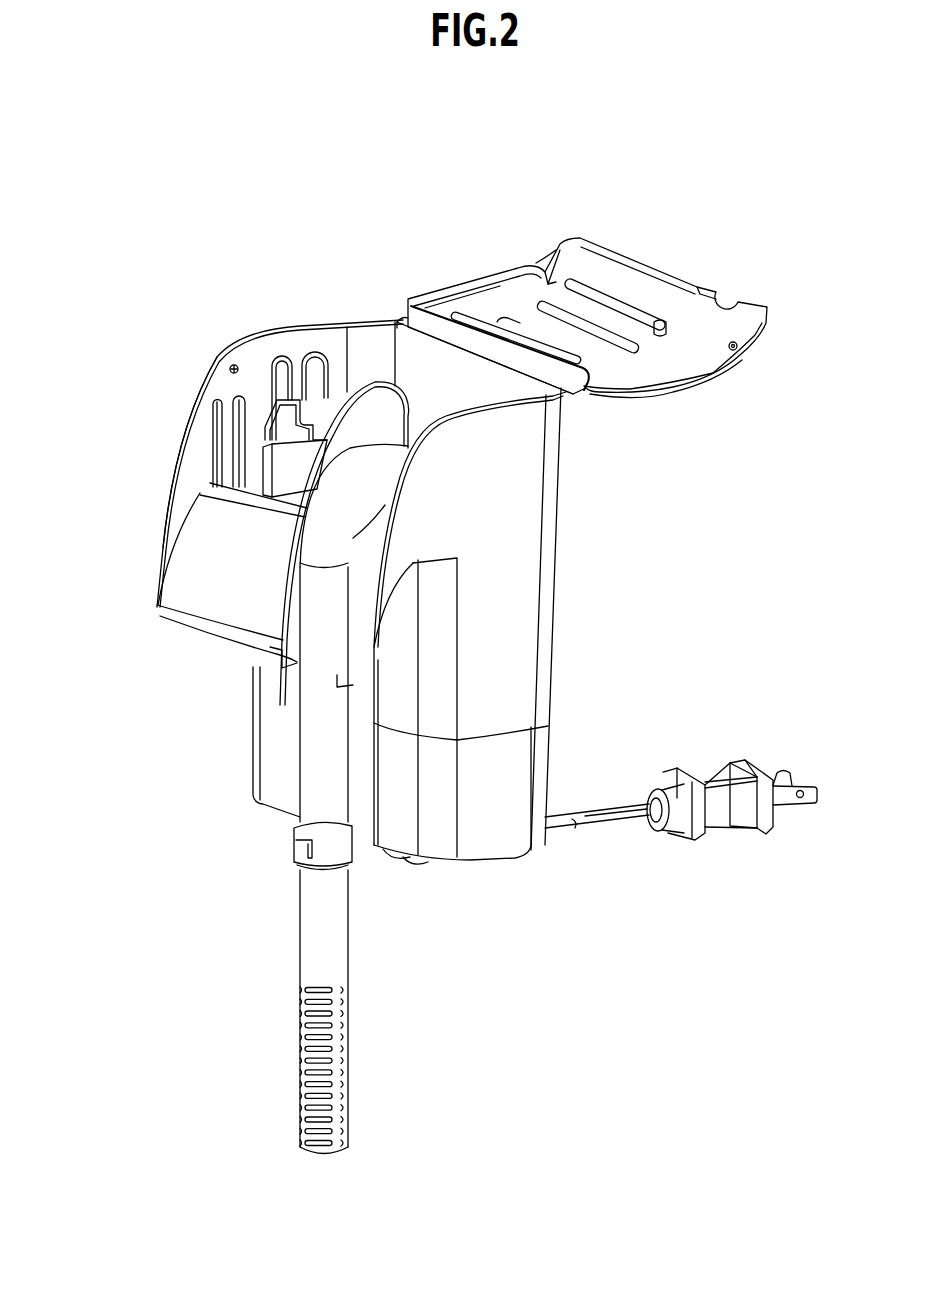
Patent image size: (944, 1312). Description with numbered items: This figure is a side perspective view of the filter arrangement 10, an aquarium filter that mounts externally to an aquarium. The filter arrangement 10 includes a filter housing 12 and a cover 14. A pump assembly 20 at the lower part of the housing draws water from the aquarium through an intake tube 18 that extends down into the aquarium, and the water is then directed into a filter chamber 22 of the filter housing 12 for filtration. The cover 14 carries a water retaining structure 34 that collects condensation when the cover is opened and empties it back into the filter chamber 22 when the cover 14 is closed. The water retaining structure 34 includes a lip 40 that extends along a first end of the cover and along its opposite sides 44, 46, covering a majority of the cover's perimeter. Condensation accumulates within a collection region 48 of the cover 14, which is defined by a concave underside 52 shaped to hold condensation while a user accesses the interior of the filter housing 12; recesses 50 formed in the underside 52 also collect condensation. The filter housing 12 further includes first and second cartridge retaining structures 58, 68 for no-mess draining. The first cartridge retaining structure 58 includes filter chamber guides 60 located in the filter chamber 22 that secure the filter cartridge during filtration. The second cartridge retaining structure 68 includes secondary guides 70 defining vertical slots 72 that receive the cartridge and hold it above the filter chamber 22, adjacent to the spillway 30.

The filter arrangement 10 is at (266, 207).
The filter housing 12 is at (512, 591).
The cover 14 is at (617, 275).
The intake tube 18 is at (312, 945).
The pump assembly 20 is at (482, 825).
The filter chamber 22 is at (352, 330).
The spillway 30 is at (225, 592).
The water retaining structure 34 is at (503, 246).
The lip 40 is at (673, 370).
The side of the cover 44 is at (394, 307).
The side of the cover 46 is at (653, 395).
The collection region 48 is at (469, 285).
The recesses 50 is at (608, 333).
The underside 52 is at (553, 295).
The first cartridge retaining structure 58 is at (248, 340).
The filter chamber guides 60 is at (303, 339).
The second cartridge retaining structure 68 is at (177, 492).
The secondary guides 70 is at (233, 390).
The vertical slots 72 is at (213, 449).